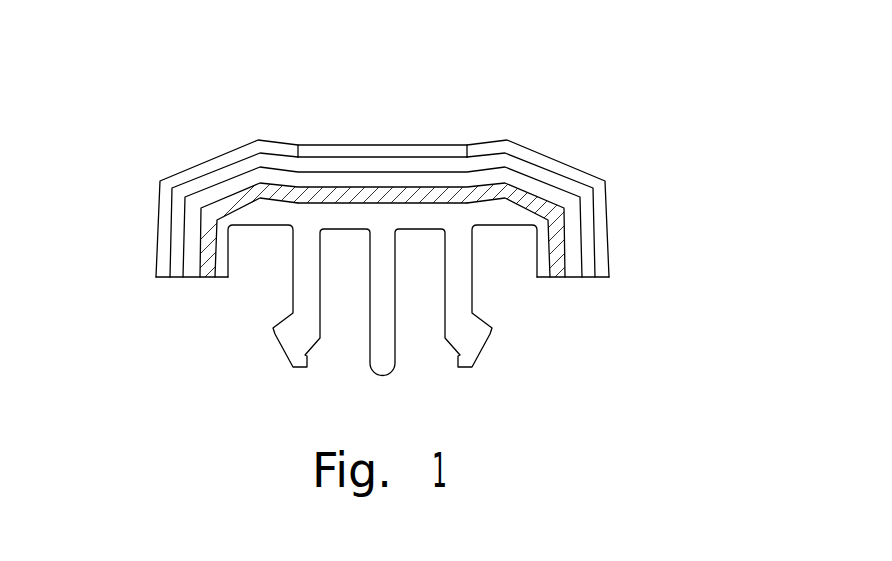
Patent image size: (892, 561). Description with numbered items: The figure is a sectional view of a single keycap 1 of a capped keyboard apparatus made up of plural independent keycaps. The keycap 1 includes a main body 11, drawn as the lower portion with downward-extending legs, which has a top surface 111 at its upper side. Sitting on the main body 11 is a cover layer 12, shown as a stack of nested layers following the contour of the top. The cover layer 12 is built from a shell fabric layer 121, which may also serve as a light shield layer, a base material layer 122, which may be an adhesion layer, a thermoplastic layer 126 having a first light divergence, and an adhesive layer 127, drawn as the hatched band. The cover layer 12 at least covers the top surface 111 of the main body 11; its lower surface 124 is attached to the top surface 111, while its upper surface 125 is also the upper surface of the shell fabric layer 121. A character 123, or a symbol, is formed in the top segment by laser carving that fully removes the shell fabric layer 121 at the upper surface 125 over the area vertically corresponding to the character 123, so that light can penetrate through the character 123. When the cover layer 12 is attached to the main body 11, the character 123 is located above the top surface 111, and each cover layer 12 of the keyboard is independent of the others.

The keycap 1 is at (583, 42).
The main body 11 is at (545, 265).
The top surface 111 is at (387, 203).
The cover layer 12 is at (578, 170).
The shell fabric layer 121 is at (168, 198).
The base material layer 122 is at (585, 243).
The character 123 is at (375, 153).
The lower surface 124 is at (215, 244).
The upper surface 125 is at (273, 140).
The thermoplastic layer 126 is at (573, 265).
The adhesive layer 127 is at (205, 265).